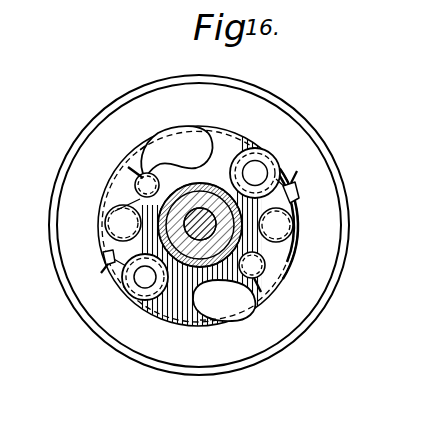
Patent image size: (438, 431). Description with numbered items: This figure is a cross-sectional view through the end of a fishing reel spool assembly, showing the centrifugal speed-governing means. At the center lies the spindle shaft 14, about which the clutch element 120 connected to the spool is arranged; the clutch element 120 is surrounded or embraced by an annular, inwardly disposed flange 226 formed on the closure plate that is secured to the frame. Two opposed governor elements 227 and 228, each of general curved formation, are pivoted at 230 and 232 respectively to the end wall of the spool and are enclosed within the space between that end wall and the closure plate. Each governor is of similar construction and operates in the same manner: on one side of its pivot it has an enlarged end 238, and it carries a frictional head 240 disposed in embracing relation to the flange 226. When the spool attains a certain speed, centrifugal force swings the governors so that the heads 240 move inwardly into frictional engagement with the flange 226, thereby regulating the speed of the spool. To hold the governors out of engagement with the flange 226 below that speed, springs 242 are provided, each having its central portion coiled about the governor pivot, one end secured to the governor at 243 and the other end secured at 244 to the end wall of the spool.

The spindle shaft 14 is at (196, 243).
The clutch element 120 is at (200, 226).
The annular flange 226 is at (220, 270).
The governor element 227 is at (110, 190).
The governor element 228 is at (277, 274).
The pivot 230 is at (118, 223).
The pivot 232 is at (297, 224).
The enlarged end 238 is at (181, 122).
The frictional head 240 is at (128, 296).
The spring 242 is at (138, 170).
The spring end securement to governor 243 is at (103, 258).
The spring end securement to end wall 244 is at (145, 174).